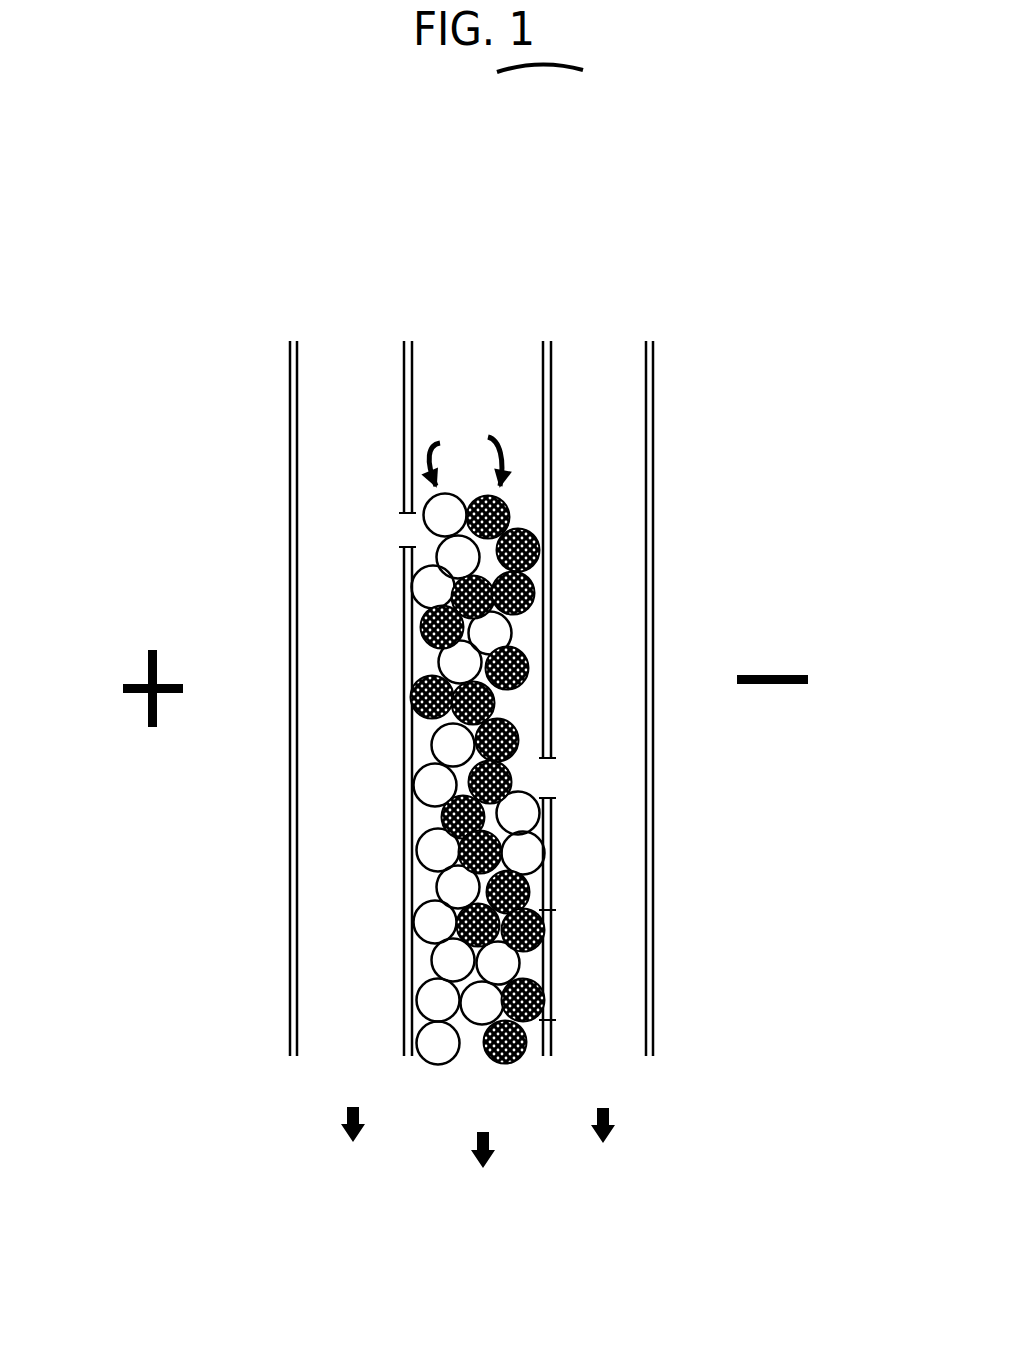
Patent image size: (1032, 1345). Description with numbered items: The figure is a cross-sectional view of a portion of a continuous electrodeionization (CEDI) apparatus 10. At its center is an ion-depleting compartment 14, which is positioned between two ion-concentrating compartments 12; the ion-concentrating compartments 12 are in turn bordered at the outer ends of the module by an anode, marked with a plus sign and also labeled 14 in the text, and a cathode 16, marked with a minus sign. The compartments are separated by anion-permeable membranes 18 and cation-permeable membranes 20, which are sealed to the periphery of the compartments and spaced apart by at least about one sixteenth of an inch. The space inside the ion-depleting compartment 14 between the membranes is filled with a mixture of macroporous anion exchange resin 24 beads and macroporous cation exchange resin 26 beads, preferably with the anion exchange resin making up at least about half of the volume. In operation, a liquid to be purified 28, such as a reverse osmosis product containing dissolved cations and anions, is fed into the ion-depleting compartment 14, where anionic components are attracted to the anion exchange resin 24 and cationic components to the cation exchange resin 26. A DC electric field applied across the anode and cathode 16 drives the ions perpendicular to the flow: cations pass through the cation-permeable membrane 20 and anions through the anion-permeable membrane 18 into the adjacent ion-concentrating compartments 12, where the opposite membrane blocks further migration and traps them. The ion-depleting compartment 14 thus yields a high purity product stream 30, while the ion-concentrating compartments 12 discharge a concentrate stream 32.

The CEDI apparatus 10 is at (833, 350).
The ion-concentrating compartment 12 is at (340, 357).
The ion-depleting compartment 14 is at (515, 345).
The cathode 16 is at (812, 680).
The anion-permeable membrane 18 is at (404, 345).
The cation-permeable membrane 20 is at (290, 400).
The macroporous anion exchange resin 24 is at (423, 522).
The macroporous cation exchange resin 26 is at (515, 752).
The liquid to be purified 28 is at (465, 454).
The high purity product stream 30 is at (494, 1158).
The concentrate stream 32 is at (362, 1130).